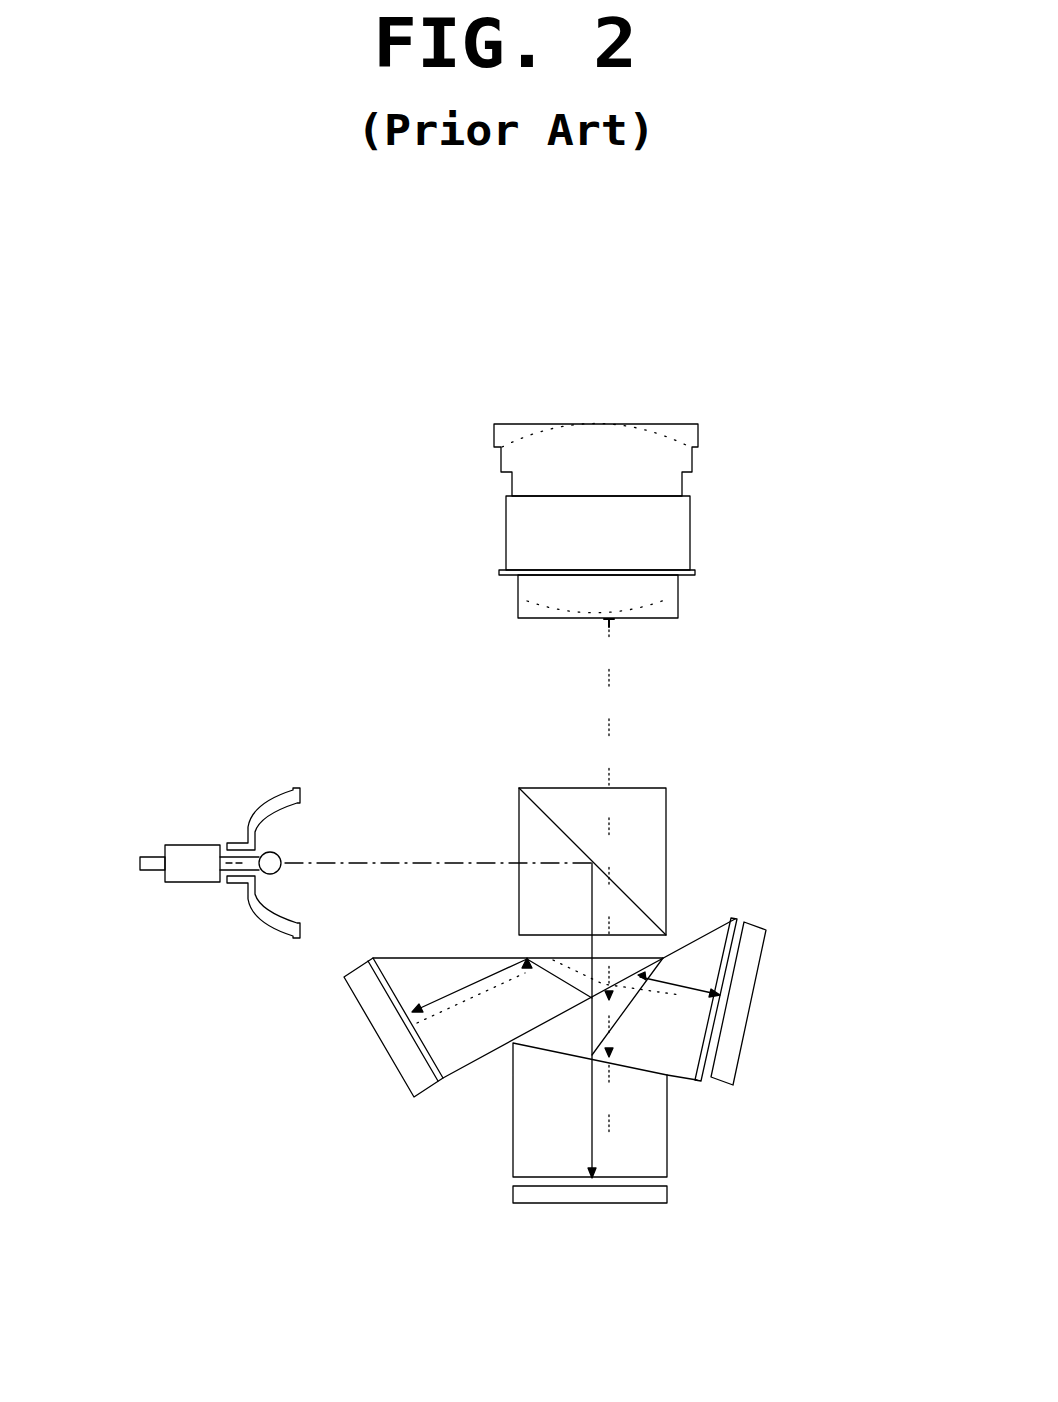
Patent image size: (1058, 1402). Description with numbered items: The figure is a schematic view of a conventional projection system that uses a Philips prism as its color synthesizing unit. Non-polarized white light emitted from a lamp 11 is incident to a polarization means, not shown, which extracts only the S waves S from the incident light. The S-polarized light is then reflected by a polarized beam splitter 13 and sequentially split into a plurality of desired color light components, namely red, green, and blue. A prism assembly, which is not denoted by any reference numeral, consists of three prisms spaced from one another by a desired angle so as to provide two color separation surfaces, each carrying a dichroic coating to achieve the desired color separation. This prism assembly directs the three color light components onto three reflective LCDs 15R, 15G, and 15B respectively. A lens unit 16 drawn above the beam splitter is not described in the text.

The lamp 11 is at (226, 820).
The polarized beam splitter 13 is at (624, 805).
The reflective LCD 15B is at (414, 1062).
The reflective LCD 15R is at (706, 951).
The reflective LCD 15G is at (614, 1178).
The projection lens unit 16 is at (633, 521).
The S waves S is at (438, 842).